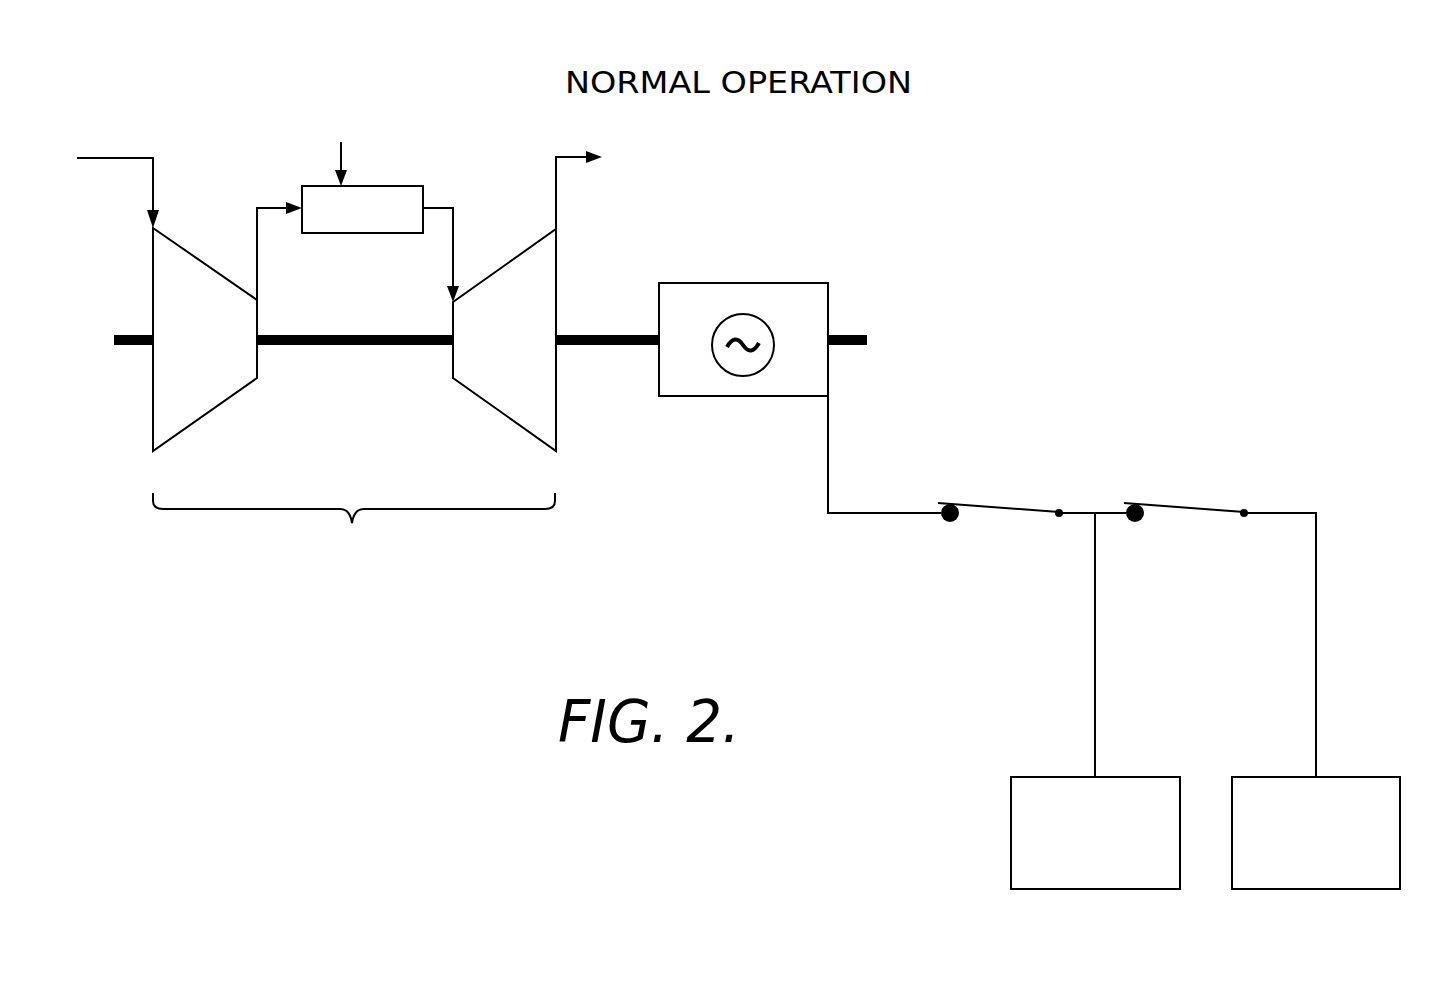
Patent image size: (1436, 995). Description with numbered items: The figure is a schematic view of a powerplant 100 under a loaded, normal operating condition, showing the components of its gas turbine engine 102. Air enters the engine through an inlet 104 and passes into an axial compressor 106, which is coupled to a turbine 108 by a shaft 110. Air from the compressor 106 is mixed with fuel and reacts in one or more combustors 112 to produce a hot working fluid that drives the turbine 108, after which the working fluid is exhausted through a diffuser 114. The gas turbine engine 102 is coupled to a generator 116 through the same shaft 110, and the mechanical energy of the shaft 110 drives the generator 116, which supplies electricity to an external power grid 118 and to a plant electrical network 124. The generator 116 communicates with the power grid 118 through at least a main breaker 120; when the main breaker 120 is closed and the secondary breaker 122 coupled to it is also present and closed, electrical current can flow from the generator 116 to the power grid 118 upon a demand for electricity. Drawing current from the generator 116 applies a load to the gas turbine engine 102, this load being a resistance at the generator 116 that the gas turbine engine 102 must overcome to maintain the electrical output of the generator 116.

The powerplant 100 is at (1118, 125).
The gas turbine engine 102 is at (354, 524).
The inlet 104 is at (97, 158).
The axial compressor 106 is at (208, 413).
The turbine 108 is at (500, 413).
The shaft 110 is at (352, 346).
The combustor 112 is at (388, 186).
The diffuser 114 is at (556, 166).
The generator 116 is at (738, 283).
The power grid 118 is at (1353, 777).
The main breaker 120 is at (997, 504).
The secondary breaker 122 is at (1183, 504).
The plant electrical network 124 is at (1136, 777).